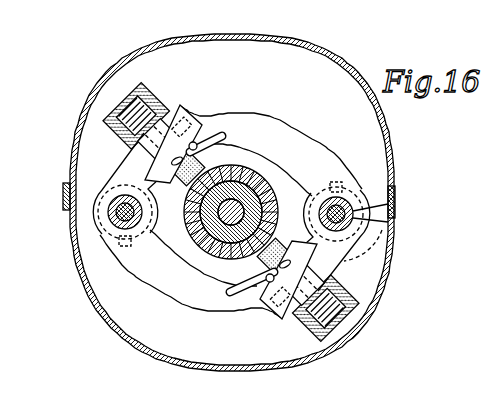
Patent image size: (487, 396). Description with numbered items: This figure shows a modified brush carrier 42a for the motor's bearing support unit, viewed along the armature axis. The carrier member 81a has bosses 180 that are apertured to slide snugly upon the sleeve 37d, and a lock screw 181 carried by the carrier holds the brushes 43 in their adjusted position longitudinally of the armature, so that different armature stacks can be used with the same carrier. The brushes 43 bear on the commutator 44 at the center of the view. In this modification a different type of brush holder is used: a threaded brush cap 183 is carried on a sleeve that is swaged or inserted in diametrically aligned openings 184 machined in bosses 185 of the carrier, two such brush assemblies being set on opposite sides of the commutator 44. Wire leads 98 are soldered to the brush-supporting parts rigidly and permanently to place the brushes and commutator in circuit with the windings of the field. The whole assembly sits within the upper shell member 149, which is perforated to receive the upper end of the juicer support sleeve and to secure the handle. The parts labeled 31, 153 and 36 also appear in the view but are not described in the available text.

The housing 31 is at (207, 202).
The upper shell member 149 is at (75, 147).
The stop member 153 is at (63, 195).
The stop member 36 is at (395, 203).
The sleeve 37d is at (395, 226).
The brush carrier 42a is at (190, 309).
The commutator 44 is at (272, 190).
The brushes 43 is at (281, 243).
The carrier member 81a is at (323, 163).
The threaded brush cap 183 is at (268, 193).
The bosses 185 is at (198, 110).
The diametrically aligned openings 184 is at (206, 119).
The wire leads 98 is at (238, 294).
The lock screw 181 is at (122, 246).
The bosses 180 is at (376, 256).